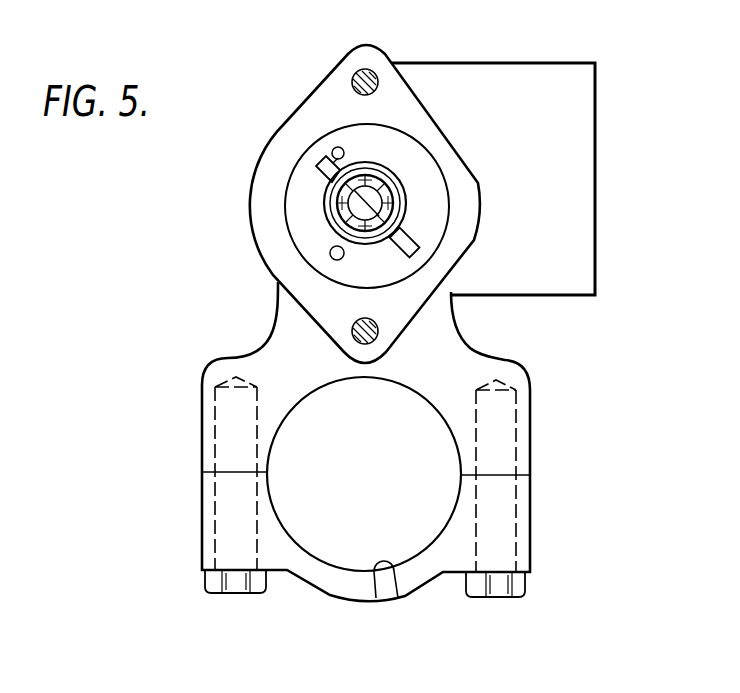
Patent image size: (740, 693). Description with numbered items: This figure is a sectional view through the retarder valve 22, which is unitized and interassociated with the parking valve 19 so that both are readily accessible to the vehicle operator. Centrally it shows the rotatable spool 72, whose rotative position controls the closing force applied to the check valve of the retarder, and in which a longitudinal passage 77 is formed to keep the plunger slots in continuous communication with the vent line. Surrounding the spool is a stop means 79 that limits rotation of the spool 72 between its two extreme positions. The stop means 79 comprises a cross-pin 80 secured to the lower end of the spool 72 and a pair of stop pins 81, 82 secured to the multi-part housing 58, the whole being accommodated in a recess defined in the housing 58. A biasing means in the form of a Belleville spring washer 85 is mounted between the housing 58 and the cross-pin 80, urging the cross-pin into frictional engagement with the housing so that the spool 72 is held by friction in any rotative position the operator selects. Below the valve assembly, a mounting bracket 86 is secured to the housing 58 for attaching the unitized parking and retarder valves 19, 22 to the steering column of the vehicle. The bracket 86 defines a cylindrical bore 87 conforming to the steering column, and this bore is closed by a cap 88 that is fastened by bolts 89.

The parking valve 19 is at (604, 113).
The retarder valve 22 is at (322, 76).
The housing 58 is at (474, 331).
The spool 72 is at (385, 200).
The longitudinal passage 77 is at (383, 212).
The stop means 79 is at (282, 208).
The cross-pin 80 is at (318, 165).
The stop pin 81 is at (330, 255).
The stop pin 82 is at (333, 149).
The Belleville spring washer 85 is at (398, 172).
The mounting bracket 86 is at (330, 609).
The cylindrical bore 87 is at (398, 598).
The cap 88 is at (523, 506).
The bolts 89 is at (205, 583).